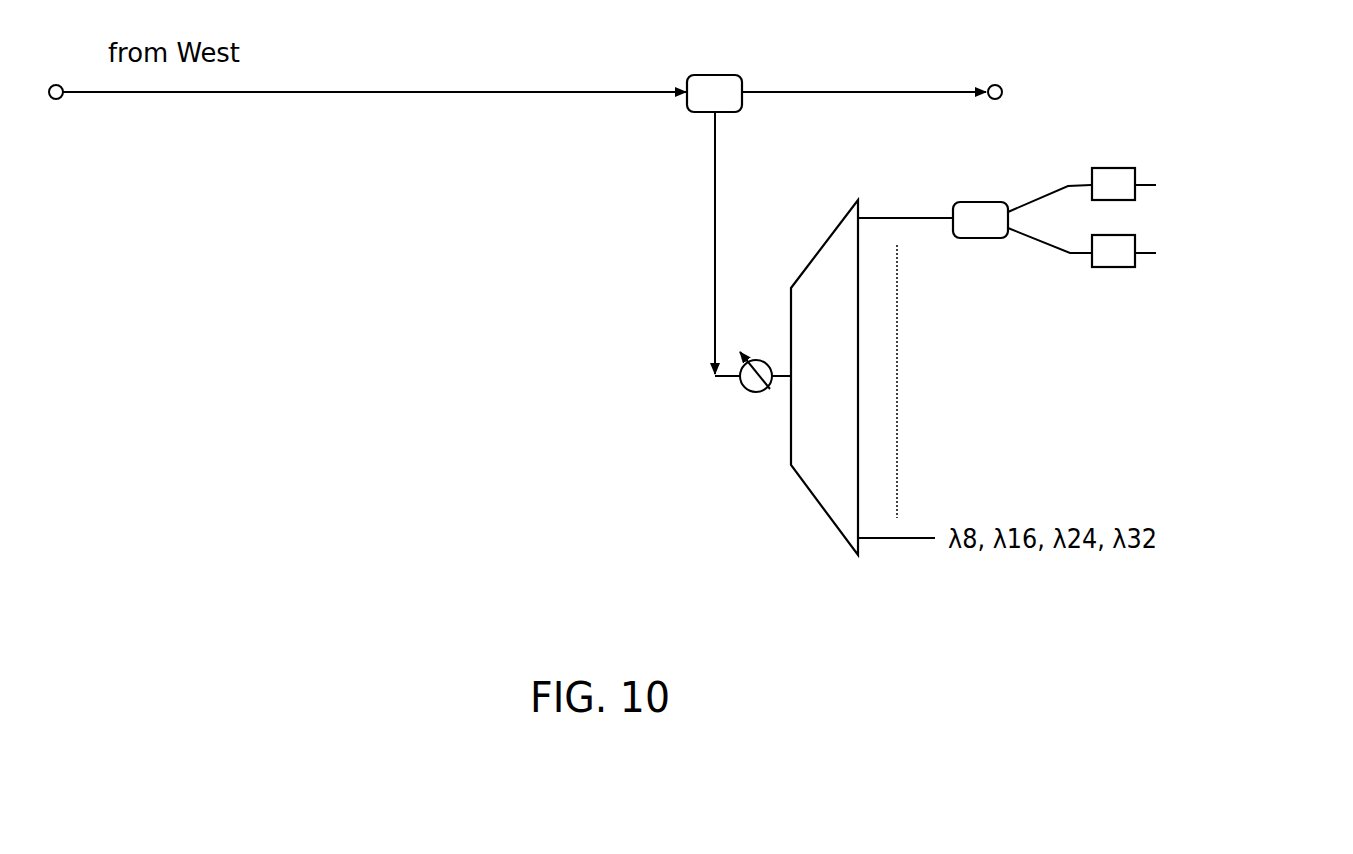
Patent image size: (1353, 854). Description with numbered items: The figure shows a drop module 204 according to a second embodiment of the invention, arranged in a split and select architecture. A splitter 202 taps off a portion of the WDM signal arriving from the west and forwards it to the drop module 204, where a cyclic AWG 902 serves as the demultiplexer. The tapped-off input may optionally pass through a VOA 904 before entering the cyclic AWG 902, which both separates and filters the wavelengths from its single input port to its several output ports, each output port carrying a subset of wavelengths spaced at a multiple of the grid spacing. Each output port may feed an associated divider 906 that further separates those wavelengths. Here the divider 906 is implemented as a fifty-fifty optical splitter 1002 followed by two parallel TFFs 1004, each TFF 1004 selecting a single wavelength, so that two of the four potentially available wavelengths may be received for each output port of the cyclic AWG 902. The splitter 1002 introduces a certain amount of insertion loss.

The splitter 202 is at (740, 91).
The drop module 204 is at (1072, 643).
The cyclic AWG 902 is at (827, 270).
The VOA 904 is at (756, 357).
The divider 906 is at (1221, 169).
The 50/50 optical splitter 1002 is at (988, 240).
The TFF 1004 is at (1122, 172).